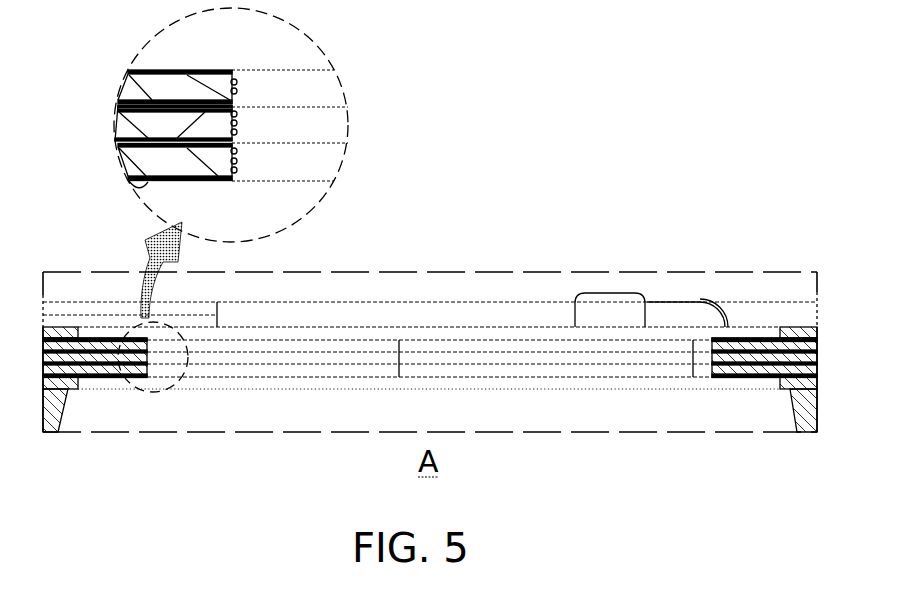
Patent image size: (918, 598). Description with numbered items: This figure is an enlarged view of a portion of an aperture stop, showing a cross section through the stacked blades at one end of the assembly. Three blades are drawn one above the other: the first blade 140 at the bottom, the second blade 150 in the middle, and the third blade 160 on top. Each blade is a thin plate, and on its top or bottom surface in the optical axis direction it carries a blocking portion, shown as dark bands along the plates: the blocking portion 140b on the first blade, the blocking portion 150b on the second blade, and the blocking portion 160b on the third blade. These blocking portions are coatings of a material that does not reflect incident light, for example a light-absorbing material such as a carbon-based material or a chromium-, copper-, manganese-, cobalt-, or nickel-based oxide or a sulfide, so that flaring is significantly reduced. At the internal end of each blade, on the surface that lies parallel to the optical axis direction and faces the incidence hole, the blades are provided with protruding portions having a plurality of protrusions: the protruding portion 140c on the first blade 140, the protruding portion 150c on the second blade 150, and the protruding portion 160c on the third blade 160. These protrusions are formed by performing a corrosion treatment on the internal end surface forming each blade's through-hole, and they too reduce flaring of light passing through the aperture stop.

The first blade 140 is at (124, 163).
The blocking portion 140b is at (138, 186).
The protruding portion 140c is at (234, 168).
The second blade 150 is at (117, 128).
The blocking portion 150b is at (118, 104).
The protruding portion 150c is at (234, 132).
The third blade 160 is at (125, 82).
The blocking portion 160b is at (143, 68).
The protruding portion 160c is at (235, 90).